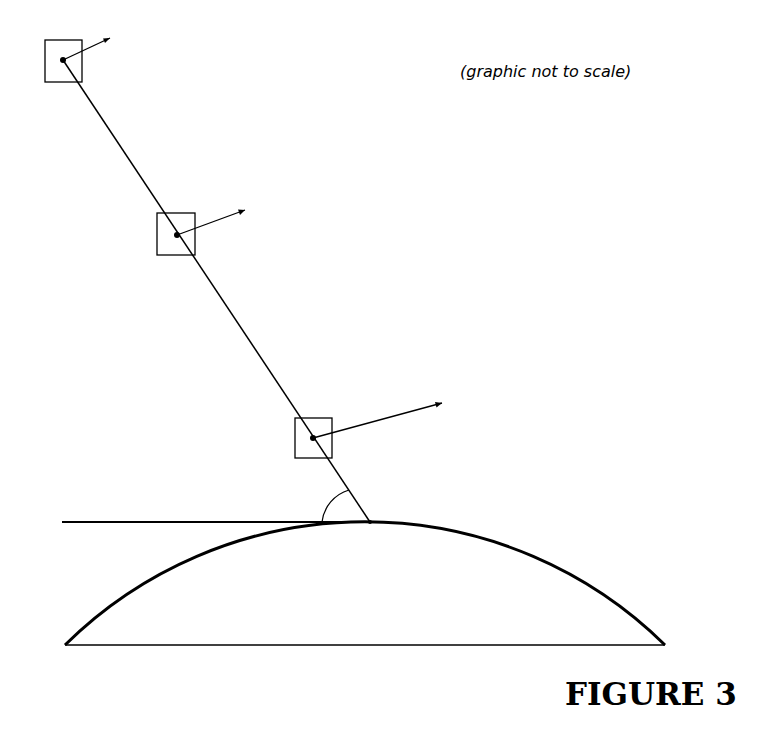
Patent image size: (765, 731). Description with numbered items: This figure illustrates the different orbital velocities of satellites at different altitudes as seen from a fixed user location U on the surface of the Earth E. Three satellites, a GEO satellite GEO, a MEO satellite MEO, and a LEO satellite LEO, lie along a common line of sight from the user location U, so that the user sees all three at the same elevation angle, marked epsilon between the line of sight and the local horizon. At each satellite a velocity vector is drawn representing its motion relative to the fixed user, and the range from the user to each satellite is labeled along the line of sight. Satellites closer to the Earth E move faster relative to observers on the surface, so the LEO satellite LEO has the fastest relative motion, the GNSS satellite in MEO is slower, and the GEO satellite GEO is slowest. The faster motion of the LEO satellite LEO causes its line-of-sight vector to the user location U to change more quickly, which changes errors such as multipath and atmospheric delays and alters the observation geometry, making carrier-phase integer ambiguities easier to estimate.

The fixed user location U is at (350, 522).
The Earth E is at (365, 583).
The GEO satellite GEO is at (98, 93).
The MEO satellite MEO is at (222, 250).
The LEO satellite LEO is at (378, 438).